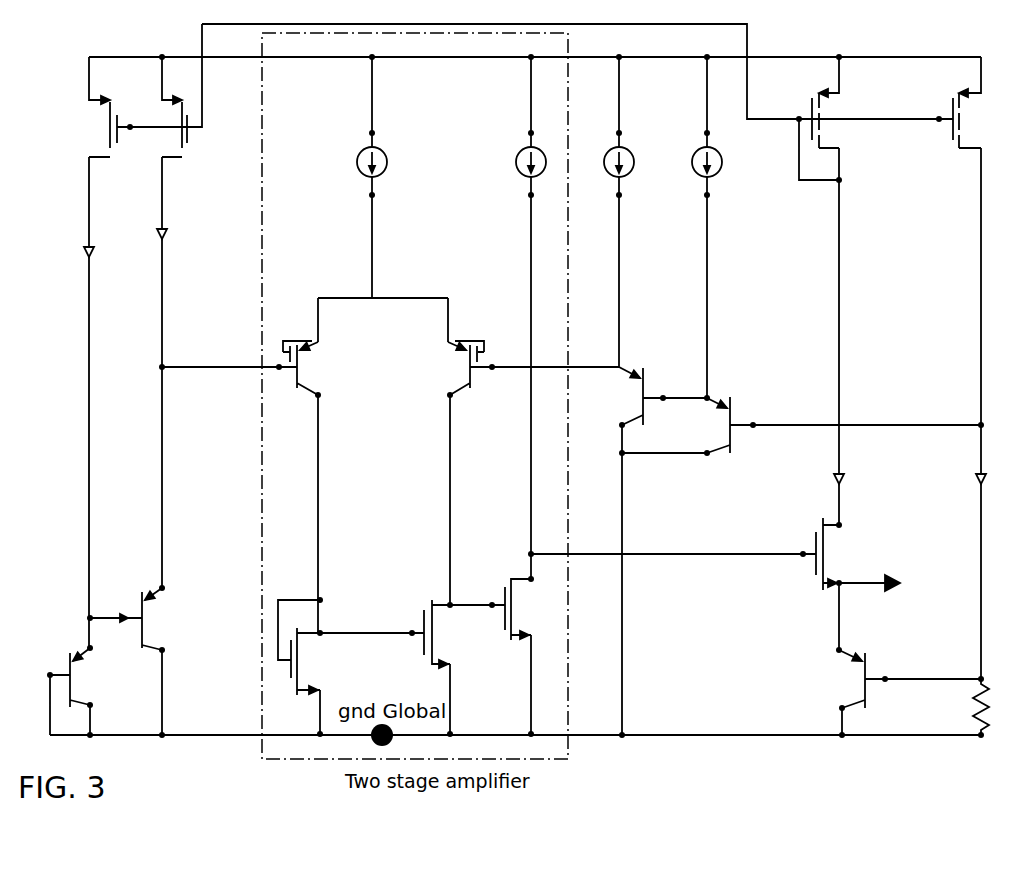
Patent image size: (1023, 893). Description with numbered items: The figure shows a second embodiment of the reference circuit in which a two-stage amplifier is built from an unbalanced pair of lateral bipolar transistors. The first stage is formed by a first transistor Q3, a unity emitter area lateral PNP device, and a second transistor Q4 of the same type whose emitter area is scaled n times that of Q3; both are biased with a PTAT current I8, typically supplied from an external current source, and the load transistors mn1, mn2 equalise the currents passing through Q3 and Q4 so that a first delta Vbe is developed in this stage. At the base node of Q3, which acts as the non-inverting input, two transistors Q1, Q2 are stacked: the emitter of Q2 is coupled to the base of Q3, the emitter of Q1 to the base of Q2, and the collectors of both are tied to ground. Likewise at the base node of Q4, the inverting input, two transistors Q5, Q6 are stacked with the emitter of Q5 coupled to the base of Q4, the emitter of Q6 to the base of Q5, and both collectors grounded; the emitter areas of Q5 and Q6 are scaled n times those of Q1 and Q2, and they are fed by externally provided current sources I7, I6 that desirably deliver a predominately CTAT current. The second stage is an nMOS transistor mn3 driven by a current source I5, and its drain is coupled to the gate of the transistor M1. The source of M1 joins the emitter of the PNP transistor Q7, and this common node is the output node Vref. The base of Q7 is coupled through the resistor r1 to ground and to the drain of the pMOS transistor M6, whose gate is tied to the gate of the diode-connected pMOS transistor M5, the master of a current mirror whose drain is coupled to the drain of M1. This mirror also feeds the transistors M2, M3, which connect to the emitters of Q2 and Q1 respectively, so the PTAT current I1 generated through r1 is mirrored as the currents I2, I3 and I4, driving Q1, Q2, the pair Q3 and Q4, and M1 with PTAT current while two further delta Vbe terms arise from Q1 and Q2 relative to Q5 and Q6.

The transistor M1 is at (695, 585).
The transistor M2 is at (177, 322).
The transistor M3 is at (105, 352).
The pMOS transistor M5 is at (812, 291).
The pMOS transistor M6 is at (951, 368).
The transistor Q1 is at (73, 678).
The transistor Q2 is at (130, 647).
The first transistor Q3 is at (305, 465).
The second transistor Q4 is at (531, 451).
The transistor Q5 is at (664, 538).
The transistor Q6 is at (845, 412).
The PNP transistor Q7 is at (911, 679).
The load transistor MN1 mn1 is at (351, 665).
The load transistor MN2 mn2 is at (464, 667).
The nMOS transistor MN3 mn3 is at (535, 655).
The PTAT current I1 is at (995, 493).
The mirrored current I2 is at (853, 486).
The mirrored current I3 is at (100, 265).
The mirrored current I4 is at (174, 247).
The current source I5 is at (518, 318).
The current source I6 is at (693, 229).
The current source I7 is at (607, 212).
The PTAT current I8 is at (360, 177).
The resistor r1 is at (996, 707).
The output node Vref is at (885, 569).